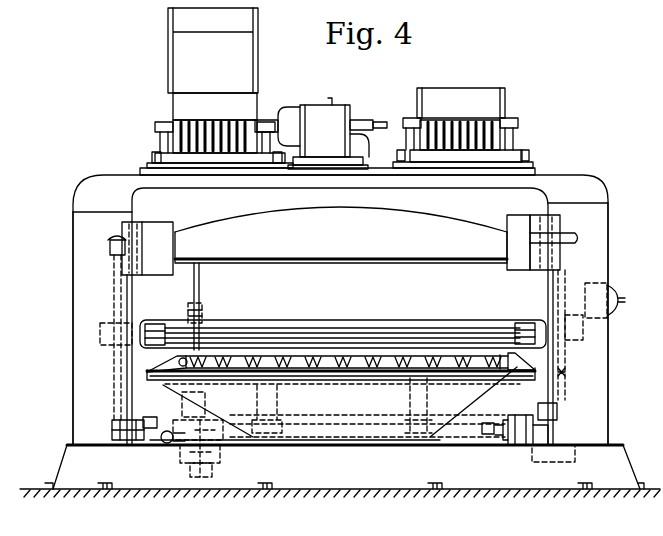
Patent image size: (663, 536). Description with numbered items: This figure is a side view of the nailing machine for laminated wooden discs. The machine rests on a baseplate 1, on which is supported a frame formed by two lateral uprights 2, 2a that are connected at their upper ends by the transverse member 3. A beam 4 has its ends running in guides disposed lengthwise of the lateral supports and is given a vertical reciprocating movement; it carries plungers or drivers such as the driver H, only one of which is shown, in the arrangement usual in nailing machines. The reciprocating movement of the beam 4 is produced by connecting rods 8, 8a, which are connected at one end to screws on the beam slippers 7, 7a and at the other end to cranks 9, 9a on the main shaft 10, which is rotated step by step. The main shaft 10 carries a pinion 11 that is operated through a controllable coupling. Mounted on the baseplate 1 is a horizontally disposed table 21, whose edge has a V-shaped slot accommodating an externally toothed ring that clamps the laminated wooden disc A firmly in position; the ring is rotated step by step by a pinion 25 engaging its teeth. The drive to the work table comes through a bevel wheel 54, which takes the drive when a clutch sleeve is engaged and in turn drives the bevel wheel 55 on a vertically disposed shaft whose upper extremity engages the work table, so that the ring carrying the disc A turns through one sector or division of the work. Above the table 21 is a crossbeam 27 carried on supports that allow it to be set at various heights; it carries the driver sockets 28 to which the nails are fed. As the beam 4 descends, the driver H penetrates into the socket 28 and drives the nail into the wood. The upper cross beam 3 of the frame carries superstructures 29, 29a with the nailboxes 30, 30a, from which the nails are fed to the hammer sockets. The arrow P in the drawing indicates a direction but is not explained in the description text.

The baseplate 1 is at (340, 471).
The lateral upright 2 is at (84, 377).
The lateral upright 2a is at (598, 373).
The transverse member 3 is at (568, 181).
The beam 4 is at (341, 235).
The beam slipper 7 is at (147, 236).
The beam slipper 7a is at (542, 233).
The connecting rod 8 is at (124, 382).
The connecting rod 8a is at (566, 372).
The crank 9 is at (128, 431).
The crank 9a is at (550, 430).
The main shaft 10 is at (484, 436).
The pinion 11 is at (200, 400).
The table 21 is at (470, 372).
The pinion 25 is at (142, 370).
The crossbeam 27 is at (320, 332).
The driver socket 28 is at (207, 312).
The superstructure 29 is at (176, 157).
The superstructure 29a is at (503, 156).
The nailbox 30 is at (183, 105).
The nailbox 30a is at (459, 99).
The bevel wheel 54 is at (172, 436).
The bevel wheel 55 is at (158, 425).
The laminated wooden disc A is at (474, 350).
The driver H is at (199, 278).
The direction of movement P is at (24, 432).